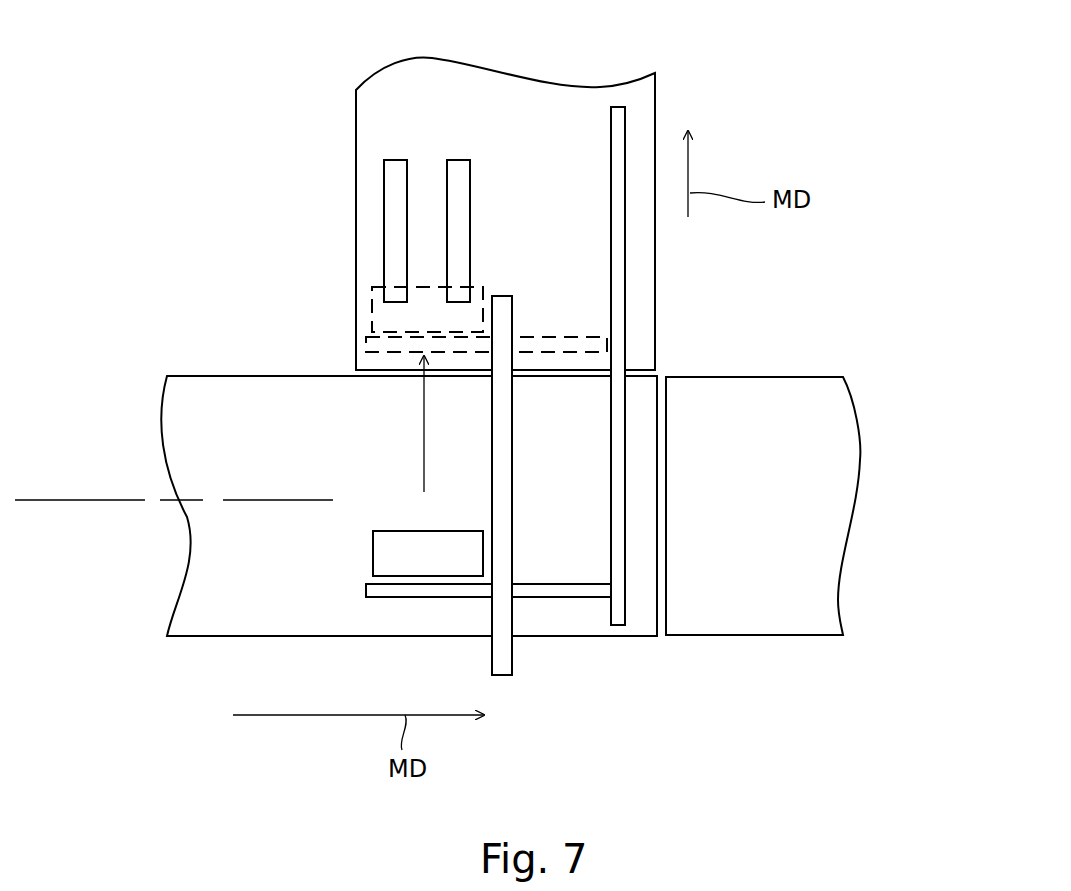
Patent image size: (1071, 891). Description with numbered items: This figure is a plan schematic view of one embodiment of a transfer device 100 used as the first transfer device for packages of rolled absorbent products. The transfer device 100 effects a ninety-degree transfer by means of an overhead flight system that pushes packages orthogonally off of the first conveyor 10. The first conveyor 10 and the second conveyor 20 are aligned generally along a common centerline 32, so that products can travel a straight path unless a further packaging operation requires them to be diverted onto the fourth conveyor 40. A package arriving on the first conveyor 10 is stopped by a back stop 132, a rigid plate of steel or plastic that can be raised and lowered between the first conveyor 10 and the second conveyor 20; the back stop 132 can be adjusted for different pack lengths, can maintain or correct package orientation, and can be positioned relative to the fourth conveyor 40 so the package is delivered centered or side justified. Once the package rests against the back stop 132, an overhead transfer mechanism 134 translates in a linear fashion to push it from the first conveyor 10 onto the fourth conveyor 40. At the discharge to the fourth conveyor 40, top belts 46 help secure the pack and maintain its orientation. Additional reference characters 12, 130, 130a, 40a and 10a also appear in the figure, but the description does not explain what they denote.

The first transfer device 100 is at (266, 187).
The fourth conveyor 40 is at (643, 305).
The first conveyor 10 is at (293, 615).
The second conveyor 20 is at (753, 618).
The top belts 46 is at (457, 220).
The fastener component 12 is at (387, 317).
The overhead transfer mechanism 134 is at (607, 340).
The transfer member 130 is at (502, 675).
The back stop 132 is at (617, 122).
The transfer direction 130a is at (424, 441).
The machine direction of second web 40a is at (690, 172).
The machine direction of first web 10a is at (318, 715).
The common centerline 32 is at (132, 503).